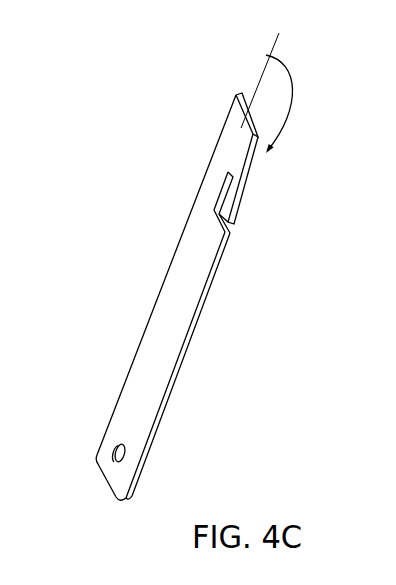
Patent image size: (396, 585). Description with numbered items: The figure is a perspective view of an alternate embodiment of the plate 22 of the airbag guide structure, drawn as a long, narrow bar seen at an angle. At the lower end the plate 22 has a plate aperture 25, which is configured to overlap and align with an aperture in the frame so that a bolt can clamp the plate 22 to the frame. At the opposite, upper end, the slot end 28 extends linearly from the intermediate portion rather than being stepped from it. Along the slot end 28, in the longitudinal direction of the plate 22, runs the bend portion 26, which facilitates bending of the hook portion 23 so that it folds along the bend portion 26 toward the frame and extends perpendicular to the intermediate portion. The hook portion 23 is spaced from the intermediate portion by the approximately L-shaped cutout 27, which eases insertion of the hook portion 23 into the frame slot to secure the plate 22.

The plate 22 is at (132, 393).
The hook portion 23 is at (242, 209).
The plate aperture 25 is at (201, 195).
The bend portion 26 is at (239, 155).
The cutout 27 is at (229, 167).
The slot end 28 is at (240, 93).